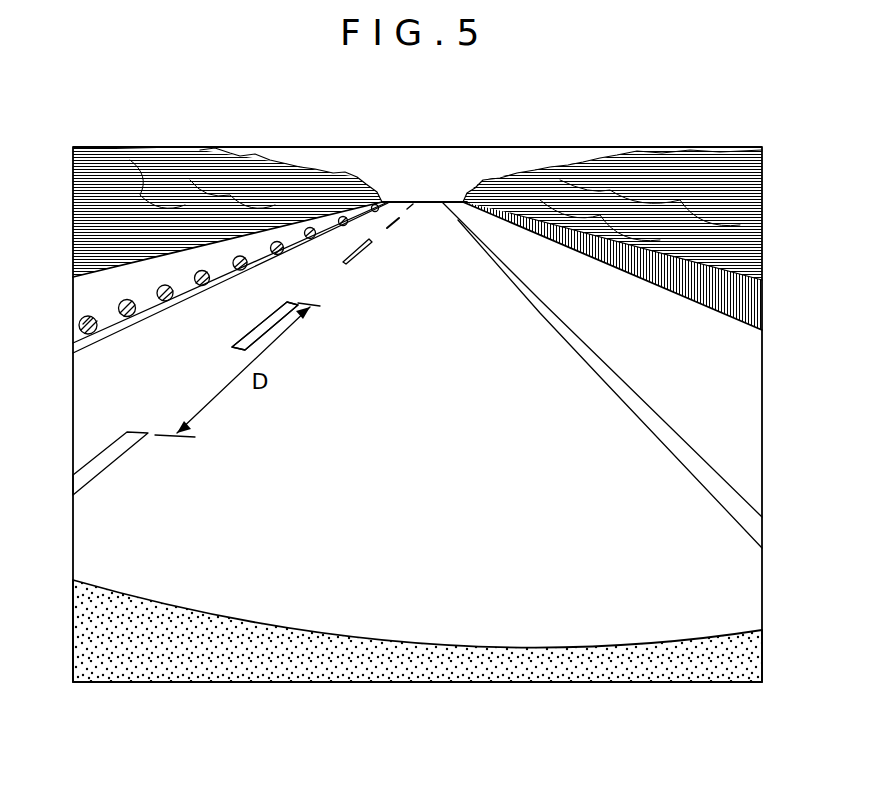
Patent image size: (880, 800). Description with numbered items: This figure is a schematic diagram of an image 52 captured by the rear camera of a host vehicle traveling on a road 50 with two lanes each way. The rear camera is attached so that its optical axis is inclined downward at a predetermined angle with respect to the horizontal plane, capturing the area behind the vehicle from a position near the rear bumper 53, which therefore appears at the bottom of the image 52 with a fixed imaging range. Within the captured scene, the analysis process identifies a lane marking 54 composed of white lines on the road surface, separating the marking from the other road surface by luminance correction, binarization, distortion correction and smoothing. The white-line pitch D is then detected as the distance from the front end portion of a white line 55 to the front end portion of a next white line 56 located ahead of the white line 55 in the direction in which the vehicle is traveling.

The road 50 is at (198, 487).
The image 52 is at (533, 147).
The rear bumper 53 is at (633, 665).
The lane marking 54 is at (292, 292).
The white line 55 is at (247, 343).
The next white line 56 is at (117, 447).